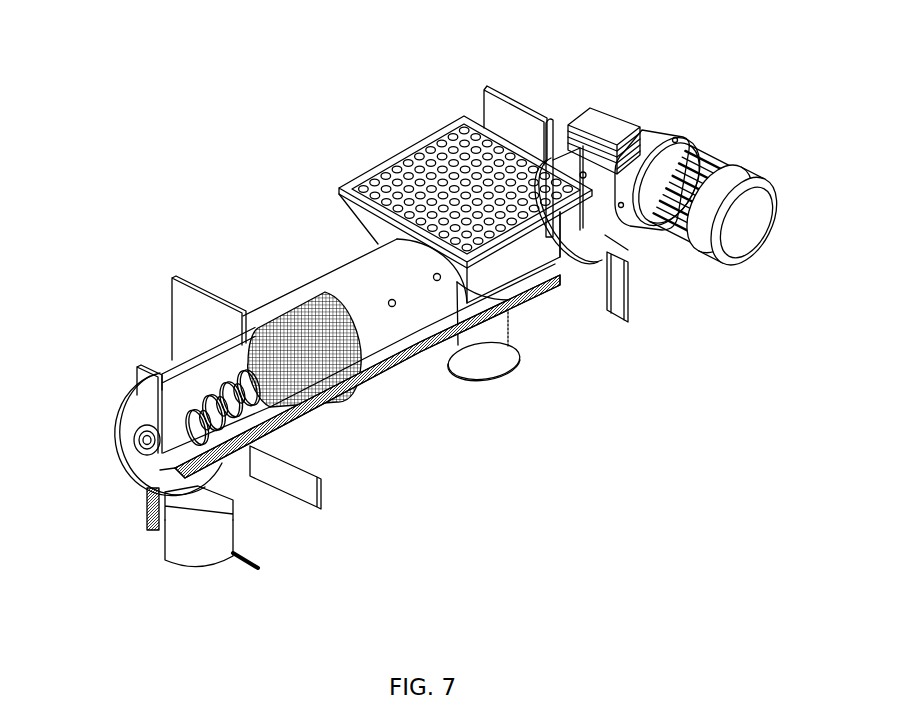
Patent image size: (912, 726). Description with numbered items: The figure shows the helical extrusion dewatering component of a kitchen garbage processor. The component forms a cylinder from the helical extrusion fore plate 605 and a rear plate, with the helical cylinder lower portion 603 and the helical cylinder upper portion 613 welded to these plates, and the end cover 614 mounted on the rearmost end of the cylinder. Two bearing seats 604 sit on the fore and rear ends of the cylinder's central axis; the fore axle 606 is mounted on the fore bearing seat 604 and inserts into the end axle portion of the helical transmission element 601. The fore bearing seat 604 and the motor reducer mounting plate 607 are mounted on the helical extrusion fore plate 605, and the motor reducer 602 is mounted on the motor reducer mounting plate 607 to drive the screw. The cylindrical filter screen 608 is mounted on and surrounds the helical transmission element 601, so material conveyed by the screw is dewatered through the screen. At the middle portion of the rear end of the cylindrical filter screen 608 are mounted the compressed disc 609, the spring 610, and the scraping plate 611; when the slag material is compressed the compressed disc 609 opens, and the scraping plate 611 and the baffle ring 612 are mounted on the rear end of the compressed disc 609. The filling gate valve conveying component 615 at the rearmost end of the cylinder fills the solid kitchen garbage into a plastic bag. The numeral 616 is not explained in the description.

The helical transmission element 601 is at (137, 445).
The motor reducer 602 is at (813, 259).
The helical cylinder lower portion 603 is at (233, 527).
The bearing seat 604 is at (133, 442).
The helical extrusion fore plate 605 is at (486, 92).
The fore axle 606 is at (625, 265).
The motor reducer mounting plate 607 is at (658, 127).
The cylindrical filter screen 608 is at (300, 424).
The compressed disc 609 is at (203, 353).
The spring 610 is at (152, 472).
The scraping plate 611 is at (320, 500).
The baffle ring 612 is at (135, 447).
The helical cylinder upper portion 613 is at (456, 118).
The end cover 614 is at (138, 367).
The filling gate valve conveying component 615 is at (160, 564).
The bearing bracket 616 is at (547, 135).